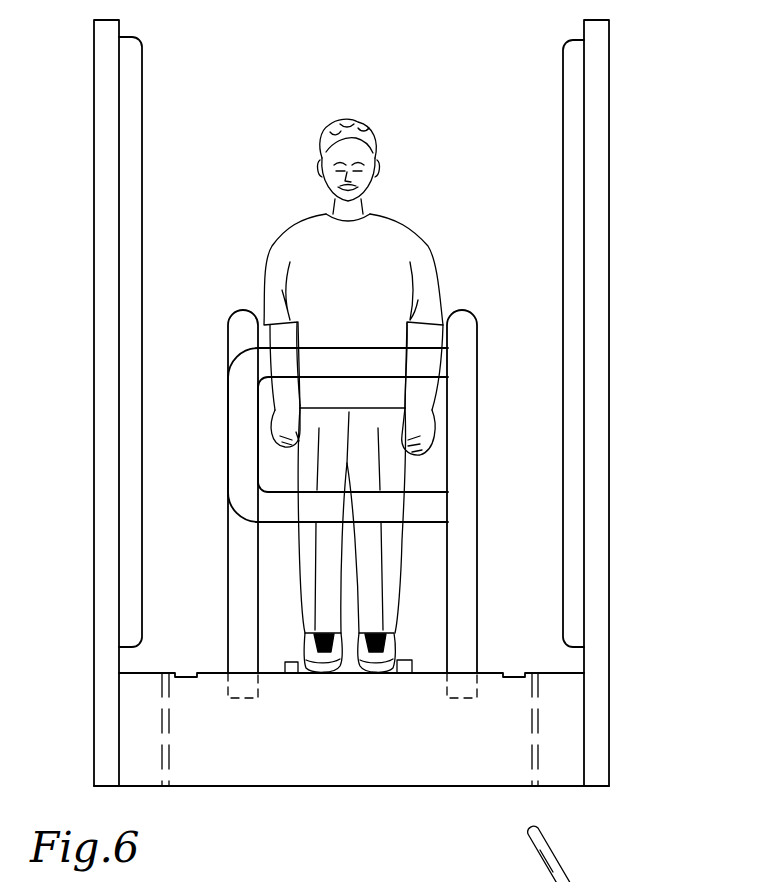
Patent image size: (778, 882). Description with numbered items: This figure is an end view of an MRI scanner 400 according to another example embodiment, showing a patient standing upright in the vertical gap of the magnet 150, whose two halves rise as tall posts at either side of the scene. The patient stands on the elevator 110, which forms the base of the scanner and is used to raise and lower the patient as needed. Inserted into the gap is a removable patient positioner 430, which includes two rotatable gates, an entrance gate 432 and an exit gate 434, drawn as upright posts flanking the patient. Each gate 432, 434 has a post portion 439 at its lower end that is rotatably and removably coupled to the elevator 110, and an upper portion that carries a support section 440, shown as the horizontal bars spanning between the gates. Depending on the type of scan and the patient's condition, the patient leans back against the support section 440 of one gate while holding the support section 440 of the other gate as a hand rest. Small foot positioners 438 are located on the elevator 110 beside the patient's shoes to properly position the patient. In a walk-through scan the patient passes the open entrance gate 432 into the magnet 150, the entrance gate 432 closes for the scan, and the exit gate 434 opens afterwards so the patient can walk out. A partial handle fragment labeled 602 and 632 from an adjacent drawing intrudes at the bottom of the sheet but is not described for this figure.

The elevator 110 is at (483, 693).
The magnet 150 is at (142, 37).
The MRI scanner 400 is at (642, 80).
The patient positioner 430 is at (349, 457).
The entrance gate 432 is at (470, 302).
The exit gate 434 is at (345, 483).
The foot positioner 438 is at (291, 662).
The post portion 439 is at (237, 582).
The support section 440 is at (230, 376).
The handle assembly 602 is at (590, 877).
The handle rod 632 is at (546, 877).